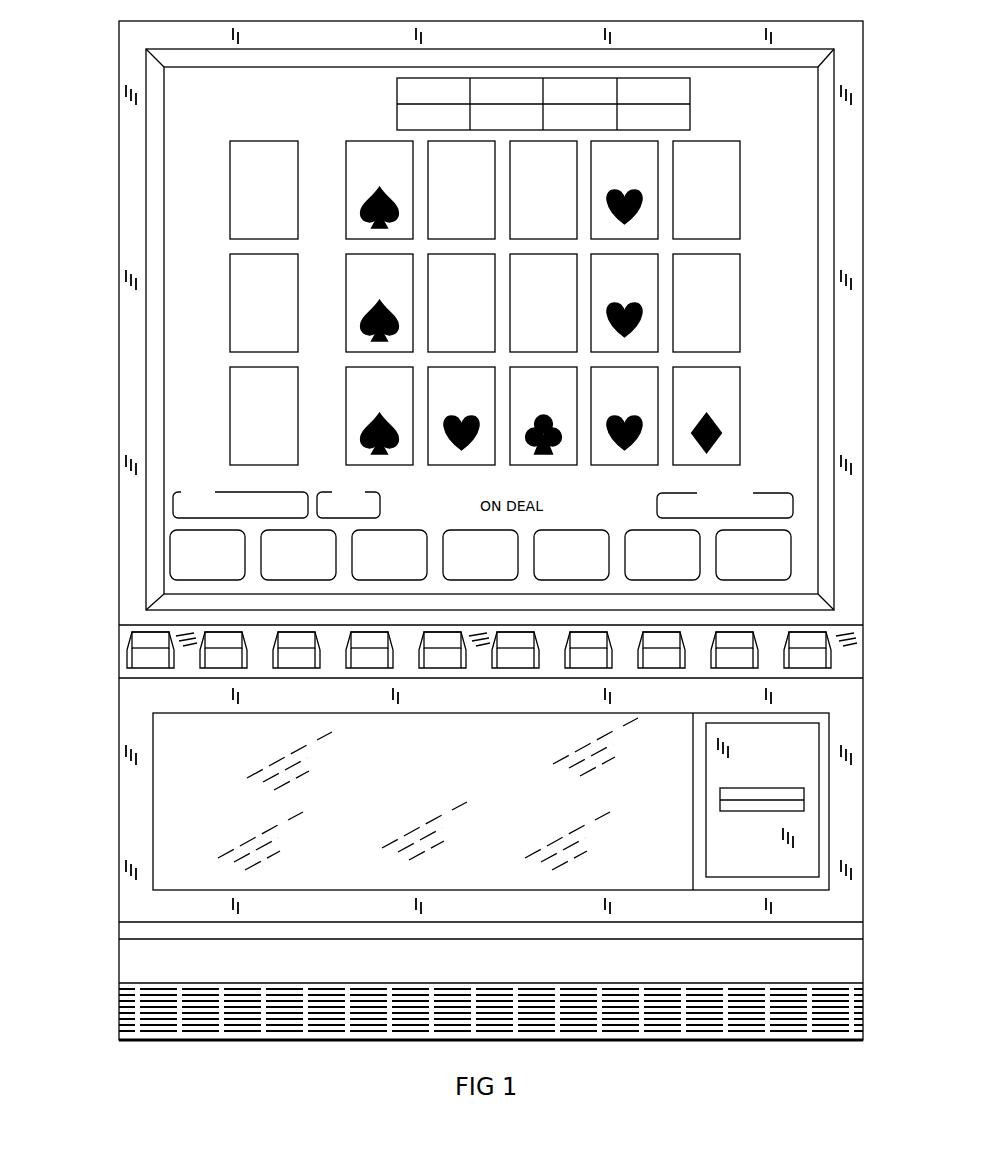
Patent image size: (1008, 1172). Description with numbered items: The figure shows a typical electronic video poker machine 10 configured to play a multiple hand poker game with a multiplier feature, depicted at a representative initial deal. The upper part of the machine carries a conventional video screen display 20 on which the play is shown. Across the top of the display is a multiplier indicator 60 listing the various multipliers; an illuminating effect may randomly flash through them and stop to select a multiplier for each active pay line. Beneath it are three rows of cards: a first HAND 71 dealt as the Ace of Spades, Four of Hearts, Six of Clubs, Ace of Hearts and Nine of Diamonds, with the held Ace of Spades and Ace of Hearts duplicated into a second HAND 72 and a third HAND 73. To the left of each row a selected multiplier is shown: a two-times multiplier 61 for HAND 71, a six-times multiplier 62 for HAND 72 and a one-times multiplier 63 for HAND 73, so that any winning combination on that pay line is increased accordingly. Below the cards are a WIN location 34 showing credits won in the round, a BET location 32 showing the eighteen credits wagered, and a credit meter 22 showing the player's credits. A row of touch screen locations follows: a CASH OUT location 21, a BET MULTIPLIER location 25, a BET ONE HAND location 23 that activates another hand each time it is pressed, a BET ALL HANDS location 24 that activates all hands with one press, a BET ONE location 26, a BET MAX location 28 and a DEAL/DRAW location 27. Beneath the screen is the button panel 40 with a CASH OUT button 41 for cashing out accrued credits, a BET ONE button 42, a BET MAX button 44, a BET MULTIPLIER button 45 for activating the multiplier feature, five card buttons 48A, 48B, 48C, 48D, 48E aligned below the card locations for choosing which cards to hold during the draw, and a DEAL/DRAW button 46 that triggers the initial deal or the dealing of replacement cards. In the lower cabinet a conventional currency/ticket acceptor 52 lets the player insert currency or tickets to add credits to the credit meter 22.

The video poker machine 10 is at (837, 217).
The video screen display 20 is at (208, 245).
The CASH OUT touch screen location 21 is at (200, 578).
The credit meter 22 is at (784, 510).
The BET ONE HAND touch screen location 23 is at (364, 578).
The BET ALL HANDS touch screen location 24 is at (453, 578).
The BET MULTIPLIER touch screen location 25 is at (273, 578).
The BET ONE location 26 is at (547, 578).
The DEAL/DRAW location 27 is at (725, 578).
The BET MAX location 28 is at (637, 578).
The BET location 32 is at (386, 500).
The WIN location 34 is at (174, 506).
The button panel 40 is at (130, 628).
The CASH OUT button 41 is at (152, 661).
The BET ONE button 42 is at (223, 660).
The BET MAX button 44 is at (296, 660).
The BET MULTIPLIER button 45 is at (369, 660).
The DEAL/DRAW button 46 is at (810, 662).
The card button 48A is at (444, 660).
The card button 48B is at (519, 660).
The card button 48C is at (592, 660).
The card button 48D is at (661, 660).
The card button 48E is at (734, 660).
The currency/ticket acceptor 52 is at (794, 805).
The multiplier indicator 60 is at (693, 107).
The 2× multiplier 61 is at (244, 384).
The 6× multiplier 62 is at (242, 275).
The 1× multiplier 63 is at (240, 180).
The first HAND 71 is at (746, 411).
The second HAND 72 is at (746, 297).
The third HAND 73 is at (746, 183).